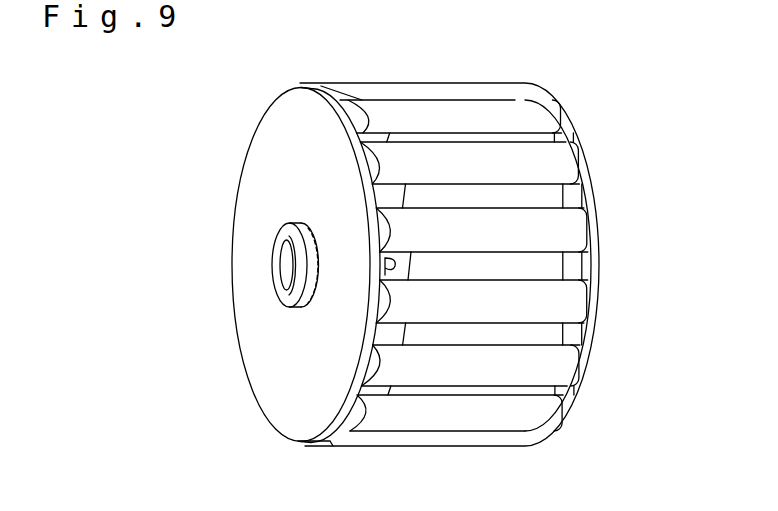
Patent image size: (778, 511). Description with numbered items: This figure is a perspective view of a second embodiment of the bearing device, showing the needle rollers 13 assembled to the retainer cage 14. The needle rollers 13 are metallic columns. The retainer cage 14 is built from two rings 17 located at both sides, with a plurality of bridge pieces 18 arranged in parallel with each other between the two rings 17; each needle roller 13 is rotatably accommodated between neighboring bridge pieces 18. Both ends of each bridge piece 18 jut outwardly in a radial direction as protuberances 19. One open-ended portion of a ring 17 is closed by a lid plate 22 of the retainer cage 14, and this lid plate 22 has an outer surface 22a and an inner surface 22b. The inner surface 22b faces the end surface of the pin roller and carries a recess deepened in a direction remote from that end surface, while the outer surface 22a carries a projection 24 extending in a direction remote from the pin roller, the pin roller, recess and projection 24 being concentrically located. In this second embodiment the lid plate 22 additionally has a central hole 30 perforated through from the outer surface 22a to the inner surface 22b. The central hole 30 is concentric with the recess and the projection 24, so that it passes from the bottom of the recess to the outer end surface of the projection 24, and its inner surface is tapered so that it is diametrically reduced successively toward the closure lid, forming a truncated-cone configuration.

The needle rollers 13 is at (467, 165).
The retainer cage 14 is at (288, 82).
The rings 17 is at (353, 400).
The bridge pieces 18 is at (541, 264).
The protuberances 19 is at (570, 266).
The lid plate 22 is at (278, 403).
The outer surface 22a is at (262, 157).
The inner surface 22b is at (385, 270).
The projection 24 is at (280, 293).
The central hole 30 is at (279, 250).